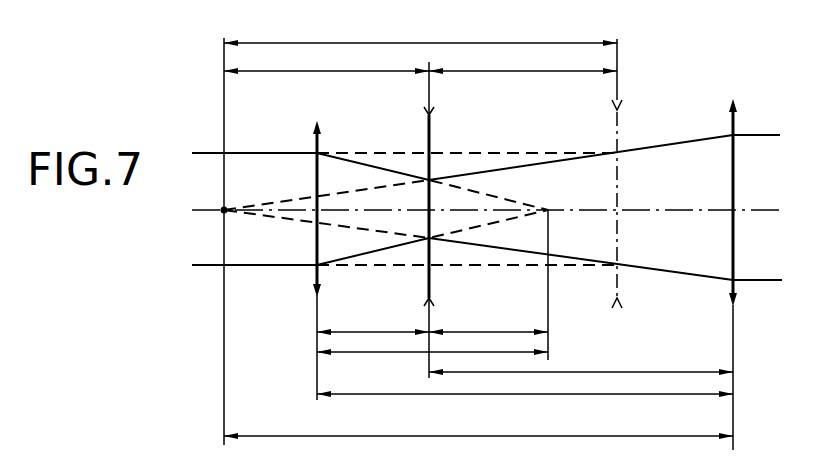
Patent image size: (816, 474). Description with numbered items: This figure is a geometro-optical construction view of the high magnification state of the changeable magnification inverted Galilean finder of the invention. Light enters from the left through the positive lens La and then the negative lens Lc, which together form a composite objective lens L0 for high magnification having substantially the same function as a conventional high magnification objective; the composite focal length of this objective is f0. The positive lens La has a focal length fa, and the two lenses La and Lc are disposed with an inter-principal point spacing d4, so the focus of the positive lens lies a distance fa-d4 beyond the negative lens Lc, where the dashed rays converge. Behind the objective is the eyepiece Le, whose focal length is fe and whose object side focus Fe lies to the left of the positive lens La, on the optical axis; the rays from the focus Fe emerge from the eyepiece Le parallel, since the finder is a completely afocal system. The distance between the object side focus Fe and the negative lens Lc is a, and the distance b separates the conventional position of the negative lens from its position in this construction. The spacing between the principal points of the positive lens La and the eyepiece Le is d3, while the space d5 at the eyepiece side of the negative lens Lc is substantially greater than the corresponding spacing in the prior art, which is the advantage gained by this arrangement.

The positive lens La is at (316, 122).
The negative lens Lc is at (433, 113).
The objective lens L0 is at (622, 108).
The eyepiece Le is at (738, 110).
The object side focus of the eyepiece Fe is at (226, 208).
The composite focal length of the objective lens f0 is at (430, 43).
The distance between object side focus Fe and negative lens Lc a is at (346, 69).
The distance between negative lens positions b is at (545, 68).
The inter-principal point spacing between positive lens La and negative lens Lc d4 is at (382, 328).
The focal length fa minus spacing d4 fa-d4 is at (487, 332).
The focal length of the positive lens fa is at (418, 354).
The space at the eyepiece side of the negative lens d5 is at (598, 373).
The inter-principal point spacing between positive lens La and eyepiece Le d3 is at (494, 395).
The focal length of the eyepiece fe is at (487, 436).